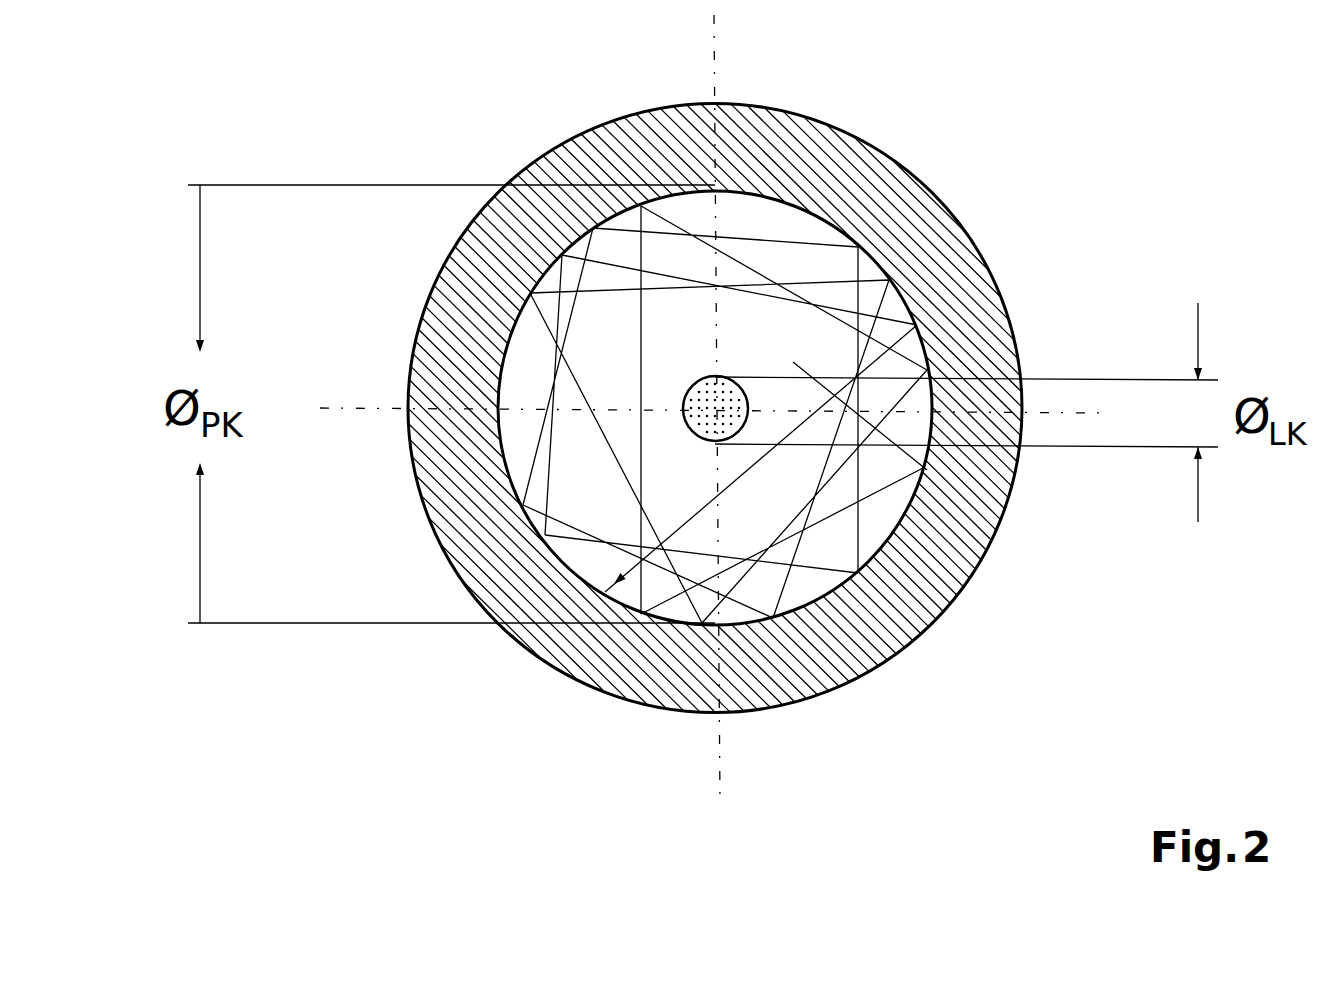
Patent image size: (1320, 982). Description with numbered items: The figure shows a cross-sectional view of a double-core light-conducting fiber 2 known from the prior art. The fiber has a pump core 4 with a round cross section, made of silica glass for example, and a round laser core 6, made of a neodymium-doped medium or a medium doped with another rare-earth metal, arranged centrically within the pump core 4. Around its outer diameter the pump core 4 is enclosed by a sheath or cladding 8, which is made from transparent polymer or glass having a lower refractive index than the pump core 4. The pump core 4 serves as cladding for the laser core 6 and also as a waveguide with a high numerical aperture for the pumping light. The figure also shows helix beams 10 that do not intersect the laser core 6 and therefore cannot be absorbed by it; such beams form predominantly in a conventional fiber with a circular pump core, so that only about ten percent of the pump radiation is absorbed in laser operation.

The double-core light-conducting fiber 2 is at (1091, 137).
The pump core 4 is at (583, 563).
The laser core 6 is at (715, 375).
The cladding 8 is at (780, 658).
The helix beams 10 is at (858, 553).